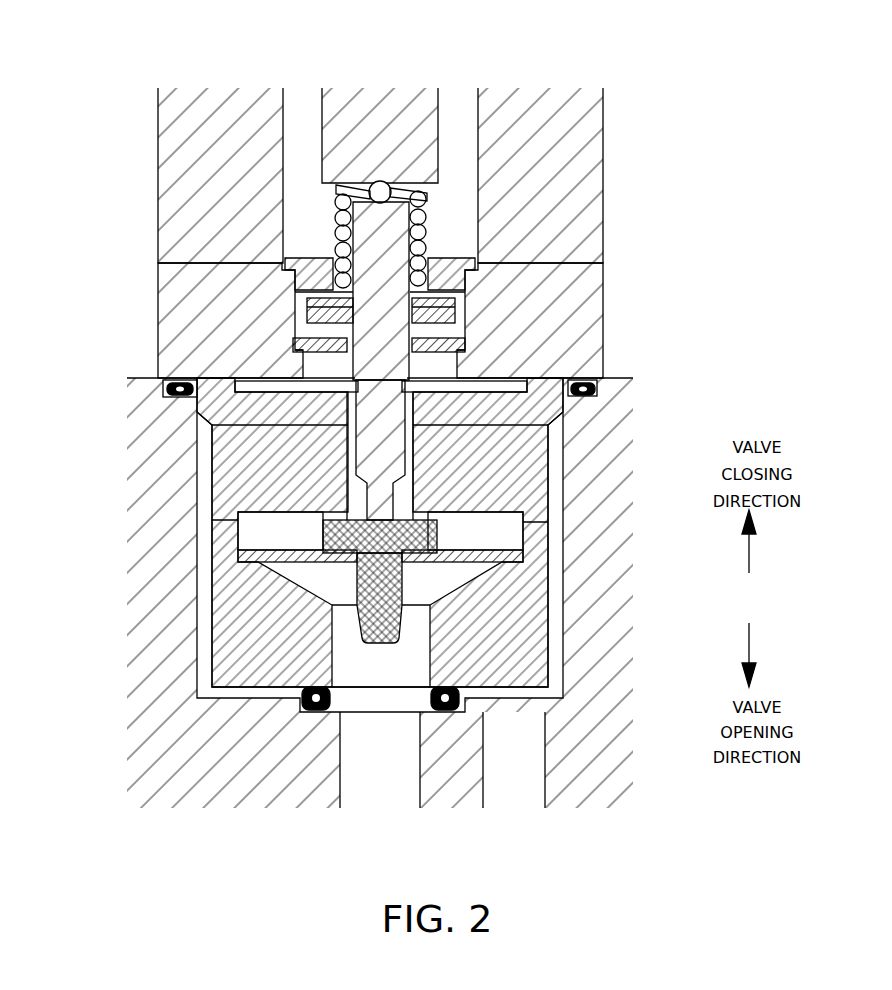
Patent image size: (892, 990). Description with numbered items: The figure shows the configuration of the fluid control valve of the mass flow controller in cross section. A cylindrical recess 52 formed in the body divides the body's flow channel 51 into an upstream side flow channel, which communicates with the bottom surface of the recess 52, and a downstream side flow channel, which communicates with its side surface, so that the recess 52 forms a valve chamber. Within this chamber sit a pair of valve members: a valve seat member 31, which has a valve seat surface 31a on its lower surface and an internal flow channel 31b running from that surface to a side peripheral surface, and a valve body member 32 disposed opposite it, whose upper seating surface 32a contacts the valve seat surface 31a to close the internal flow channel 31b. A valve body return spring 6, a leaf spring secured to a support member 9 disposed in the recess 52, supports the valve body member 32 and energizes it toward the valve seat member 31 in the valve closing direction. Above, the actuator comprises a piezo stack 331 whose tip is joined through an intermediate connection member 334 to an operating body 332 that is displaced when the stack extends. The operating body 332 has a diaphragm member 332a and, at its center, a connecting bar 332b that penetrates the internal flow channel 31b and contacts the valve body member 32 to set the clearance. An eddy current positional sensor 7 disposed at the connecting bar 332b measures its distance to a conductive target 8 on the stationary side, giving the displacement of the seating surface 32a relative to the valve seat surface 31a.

The piezo stack 331 is at (438, 113).
The intermediate connection member 334 is at (391, 190).
The operating body 332 is at (209, 361).
The diaphragm member 332a is at (330, 377).
The connecting bar 332b is at (357, 445).
The positional sensor 7 is at (467, 315).
The target 8 is at (467, 347).
The valve seat member 31 is at (383, 532).
The valve seat surface 31a is at (338, 540).
The internal flow channel 31b is at (405, 503).
The valve body member 32 is at (249, 554).
The seating surface 32a is at (343, 530).
The valve body return spring 6 is at (473, 552).
The support member 9 is at (550, 606).
The recess 52 is at (205, 648).
The flow channel 51 is at (356, 775).